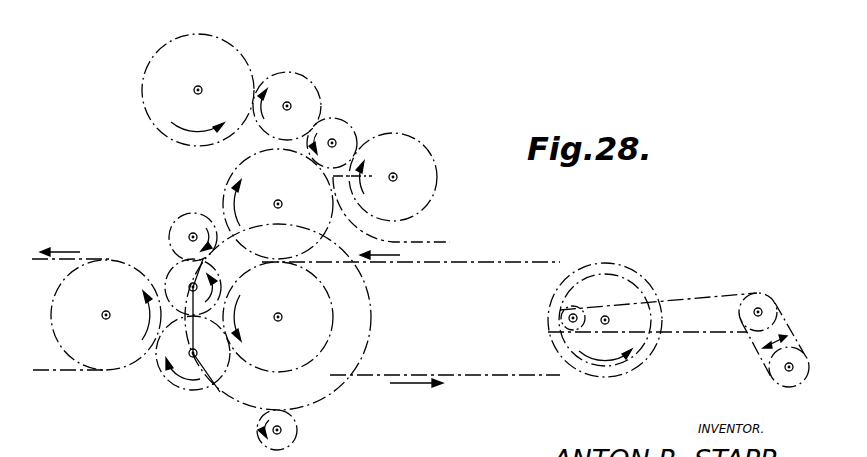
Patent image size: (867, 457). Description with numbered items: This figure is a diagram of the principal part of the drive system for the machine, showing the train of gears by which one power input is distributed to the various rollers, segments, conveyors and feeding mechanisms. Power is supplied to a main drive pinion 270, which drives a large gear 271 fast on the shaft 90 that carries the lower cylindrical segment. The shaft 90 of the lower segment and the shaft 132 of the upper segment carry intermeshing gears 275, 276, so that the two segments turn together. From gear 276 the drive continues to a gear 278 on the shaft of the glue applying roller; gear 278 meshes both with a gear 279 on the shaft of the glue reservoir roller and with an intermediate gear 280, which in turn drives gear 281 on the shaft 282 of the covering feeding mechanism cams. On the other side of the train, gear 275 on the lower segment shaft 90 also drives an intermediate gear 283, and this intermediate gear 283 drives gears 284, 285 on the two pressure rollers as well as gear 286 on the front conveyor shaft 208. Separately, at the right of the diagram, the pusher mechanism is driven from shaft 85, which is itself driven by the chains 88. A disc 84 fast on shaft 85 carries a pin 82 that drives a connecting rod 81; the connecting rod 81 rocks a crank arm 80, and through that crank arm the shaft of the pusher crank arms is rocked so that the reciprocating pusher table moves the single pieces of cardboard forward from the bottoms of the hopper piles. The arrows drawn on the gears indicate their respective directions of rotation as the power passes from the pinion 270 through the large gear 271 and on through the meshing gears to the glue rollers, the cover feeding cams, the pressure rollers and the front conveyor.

The crank arm 80 is at (752, 344).
The connecting rod 81 is at (698, 296).
The pin 82 is at (560, 317).
The disc 84 is at (555, 347).
The shaft 85 is at (607, 317).
The chains 88 is at (511, 262).
The shaft 90 is at (286, 300).
The shaft 132 is at (292, 192).
The front conveyor shaft 208 is at (103, 319).
The main drive pinion 270 is at (257, 432).
The large gear 271 is at (347, 382).
The gear 275 is at (330, 339).
The gear 276 is at (238, 170).
The gear 278 is at (362, 114).
The gear 279 is at (421, 143).
The intermediate gear 280 is at (319, 88).
The gear 281 is at (248, 60).
The shaft 282 is at (194, 90).
The intermediate gear 283 is at (160, 375).
The gear 284 is at (178, 253).
The gear 285 is at (176, 223).
The gear 286 is at (56, 288).